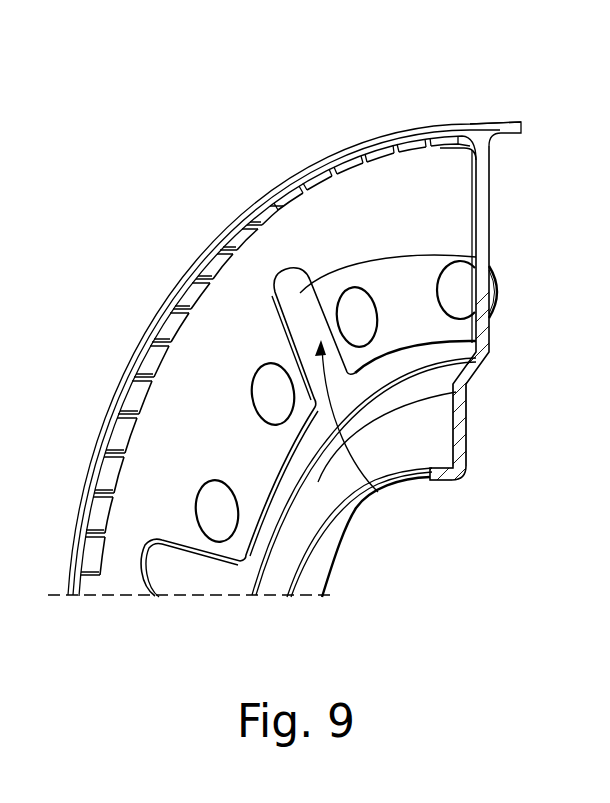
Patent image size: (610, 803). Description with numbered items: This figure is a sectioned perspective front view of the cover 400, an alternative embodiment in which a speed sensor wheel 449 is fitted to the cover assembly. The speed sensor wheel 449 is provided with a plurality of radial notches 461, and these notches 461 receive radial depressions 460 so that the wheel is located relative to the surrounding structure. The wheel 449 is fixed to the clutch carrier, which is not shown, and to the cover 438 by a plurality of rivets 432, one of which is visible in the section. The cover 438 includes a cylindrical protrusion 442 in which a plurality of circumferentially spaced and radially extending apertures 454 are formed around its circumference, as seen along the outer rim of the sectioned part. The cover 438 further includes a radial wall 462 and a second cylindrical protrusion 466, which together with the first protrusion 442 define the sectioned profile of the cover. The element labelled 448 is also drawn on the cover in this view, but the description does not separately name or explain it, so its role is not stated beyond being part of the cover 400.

The cover 400 is at (250, 167).
The rivets 432 is at (452, 292).
The cover 438 is at (478, 365).
The cylindrical protrusion 442 is at (507, 128).
The outer rim 448 is at (448, 146).
The speed sensor wheel 449 is at (122, 573).
The apertures 454 is at (168, 320).
The radial depressions 460 is at (476, 257).
The radial notches 461 is at (405, 483).
The radial wall 462 is at (470, 432).
The cylindrical protrusion 466 is at (448, 479).